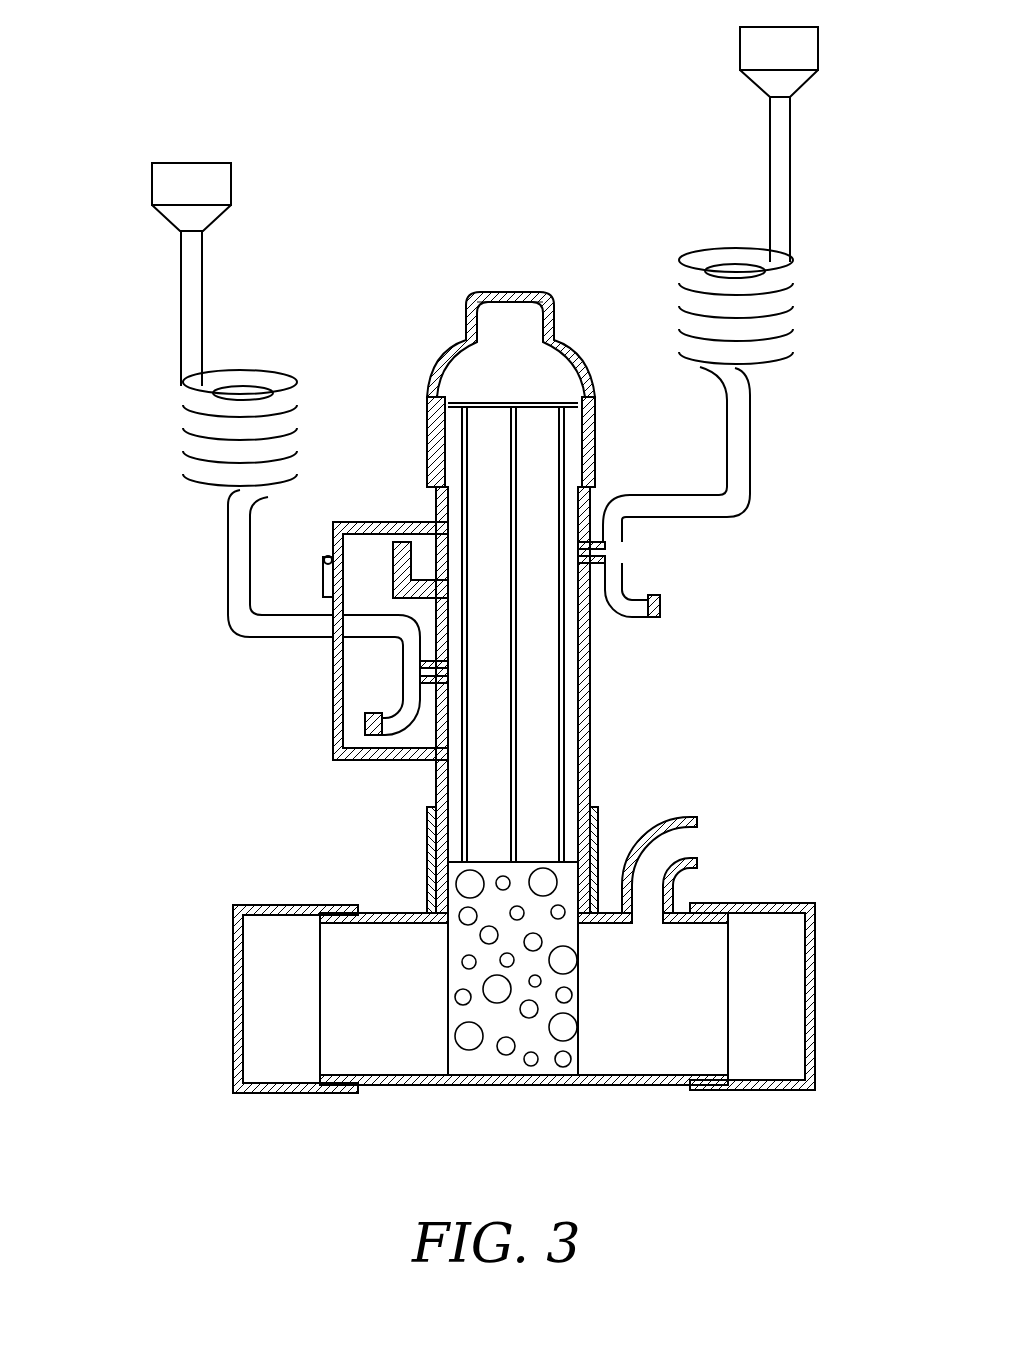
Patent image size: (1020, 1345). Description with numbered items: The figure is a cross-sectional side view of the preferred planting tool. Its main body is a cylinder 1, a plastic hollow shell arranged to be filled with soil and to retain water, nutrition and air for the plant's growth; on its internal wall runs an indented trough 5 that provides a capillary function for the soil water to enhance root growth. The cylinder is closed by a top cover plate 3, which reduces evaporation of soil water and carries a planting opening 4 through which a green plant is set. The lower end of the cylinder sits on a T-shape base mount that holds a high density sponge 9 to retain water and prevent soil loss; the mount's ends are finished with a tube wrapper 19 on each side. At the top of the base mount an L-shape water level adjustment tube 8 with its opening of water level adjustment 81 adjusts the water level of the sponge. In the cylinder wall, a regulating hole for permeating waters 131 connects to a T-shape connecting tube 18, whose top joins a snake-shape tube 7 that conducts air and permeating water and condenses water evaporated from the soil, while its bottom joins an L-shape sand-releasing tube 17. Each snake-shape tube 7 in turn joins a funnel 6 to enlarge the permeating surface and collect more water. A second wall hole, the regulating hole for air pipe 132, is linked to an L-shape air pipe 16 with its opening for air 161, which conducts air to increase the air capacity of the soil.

The cylinder 1 is at (597, 762).
The top cover plate 3 is at (568, 368).
The planting opening 4 is at (505, 322).
The indented trough 5 is at (566, 690).
The funnel 6 is at (162, 186).
The snake-shape tube 7 is at (248, 352).
The L-shape water level adjustment tube 8 is at (690, 815).
The opening of water level adjustment 81 is at (690, 848).
The high density sponge 9 is at (545, 1062).
The L-shape air pipe 16 is at (392, 557).
The L-shape sand-releasing tube 17 is at (390, 727).
The T-shape connecting tube 18 is at (408, 666).
The tube wrapper 19 is at (258, 1093).
The regulating hole for permeating waters 131 is at (448, 700).
The regulating hole for air pipe 132 is at (445, 470).
The opening for air 161 is at (402, 545).